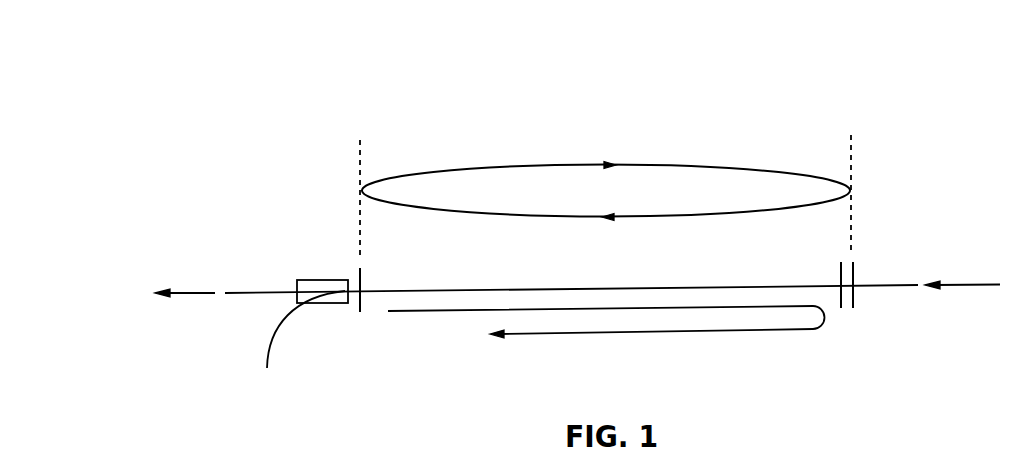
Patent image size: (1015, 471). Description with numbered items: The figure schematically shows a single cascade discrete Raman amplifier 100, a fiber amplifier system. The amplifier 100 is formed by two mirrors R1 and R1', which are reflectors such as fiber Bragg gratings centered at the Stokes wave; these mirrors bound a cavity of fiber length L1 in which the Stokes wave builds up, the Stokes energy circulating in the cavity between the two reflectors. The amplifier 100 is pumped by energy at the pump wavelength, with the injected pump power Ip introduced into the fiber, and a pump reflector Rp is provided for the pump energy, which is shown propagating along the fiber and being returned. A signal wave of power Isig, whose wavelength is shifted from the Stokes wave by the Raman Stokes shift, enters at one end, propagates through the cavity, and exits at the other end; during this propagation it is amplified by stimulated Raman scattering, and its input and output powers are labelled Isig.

The single cascade discrete Raman amplifier 100 is at (287, 88).
The mirror R1 is at (360, 213).
The mirror R1' is at (849, 180).
The fiber length L1 is at (606, 200).
The pump reflector Rp is at (843, 315).
The injected pump power Ip is at (304, 342).
The signal wave power Isig is at (577, 267).